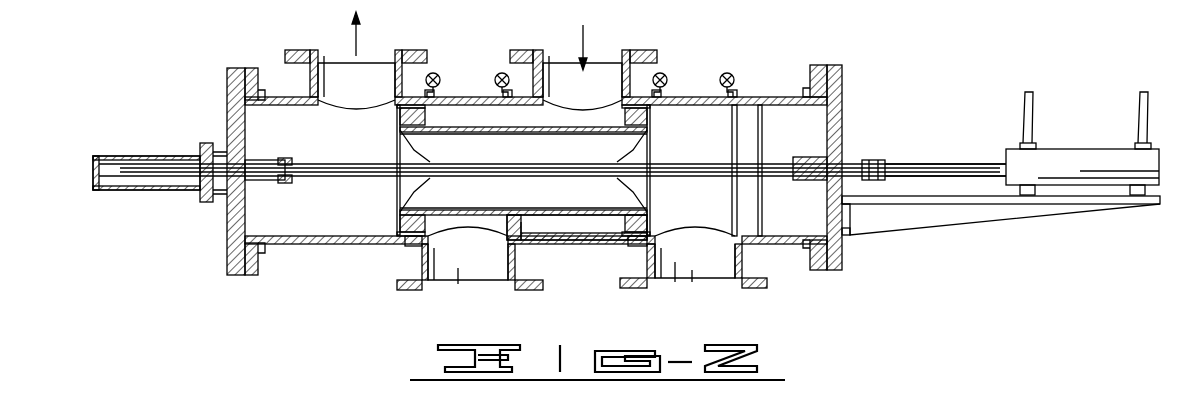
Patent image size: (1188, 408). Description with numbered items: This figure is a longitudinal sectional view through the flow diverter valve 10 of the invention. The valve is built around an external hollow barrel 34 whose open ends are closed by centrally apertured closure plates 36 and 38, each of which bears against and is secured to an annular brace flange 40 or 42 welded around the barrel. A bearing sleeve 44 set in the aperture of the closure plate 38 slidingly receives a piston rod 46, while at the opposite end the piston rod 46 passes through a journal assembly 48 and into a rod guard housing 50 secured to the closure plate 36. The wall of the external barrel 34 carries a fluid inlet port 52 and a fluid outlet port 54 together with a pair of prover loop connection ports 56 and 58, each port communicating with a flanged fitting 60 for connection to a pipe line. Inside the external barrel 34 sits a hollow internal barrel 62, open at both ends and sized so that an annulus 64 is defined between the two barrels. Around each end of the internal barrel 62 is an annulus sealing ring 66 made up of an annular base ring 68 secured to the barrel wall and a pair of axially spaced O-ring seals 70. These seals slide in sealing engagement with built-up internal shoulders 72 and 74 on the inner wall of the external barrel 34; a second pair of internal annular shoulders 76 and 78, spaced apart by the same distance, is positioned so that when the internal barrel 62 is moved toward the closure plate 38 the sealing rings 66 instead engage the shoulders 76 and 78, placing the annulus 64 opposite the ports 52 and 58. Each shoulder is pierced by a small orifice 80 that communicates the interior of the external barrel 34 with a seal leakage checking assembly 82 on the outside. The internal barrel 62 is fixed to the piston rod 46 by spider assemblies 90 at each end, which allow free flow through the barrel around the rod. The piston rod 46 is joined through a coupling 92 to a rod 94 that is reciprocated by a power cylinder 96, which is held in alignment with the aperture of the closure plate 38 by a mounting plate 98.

The flow diverter valve 10 is at (852, 58).
The external hollow barrel 34 is at (464, 97).
The closure plate 36 is at (227, 90).
The closure plate 38 is at (842, 92).
The annular brace flange 40 is at (252, 68).
The annular brace flange 42 is at (818, 65).
The bearing sleeve 44 is at (827, 158).
The piston rod 46 is at (332, 177).
The journal assembly 48 is at (260, 186).
The rod guard housing 50 is at (130, 190).
The fluid inlet port 52 is at (622, 100).
The fluid outlet port 54 is at (324, 105).
The prover loop connection port 56 is at (438, 252).
The prover loop connection port 58 is at (660, 252).
The flanged fitting 60 is at (385, 52).
The internal barrel 62 is at (562, 210).
The annulus 64 is at (576, 242).
The annulus sealing ring 66 is at (655, 112).
The annular base ring 68 is at (420, 126).
The O-ring seal 70 is at (440, 214).
The internal shoulder 72 is at (405, 246).
The internal shoulder 74 is at (640, 246).
The internal annular shoulder 76 is at (516, 242).
The internal annular shoulder 78 is at (735, 190).
The orifice 80 is at (462, 127).
The seal leakage checking assembly 82 is at (438, 72).
The spider assembly 90 is at (397, 120).
The coupling 92 is at (885, 176).
The rod 94 is at (940, 163).
The power cylinder 96 is at (1085, 150).
The mounting plate 98 is at (920, 220).